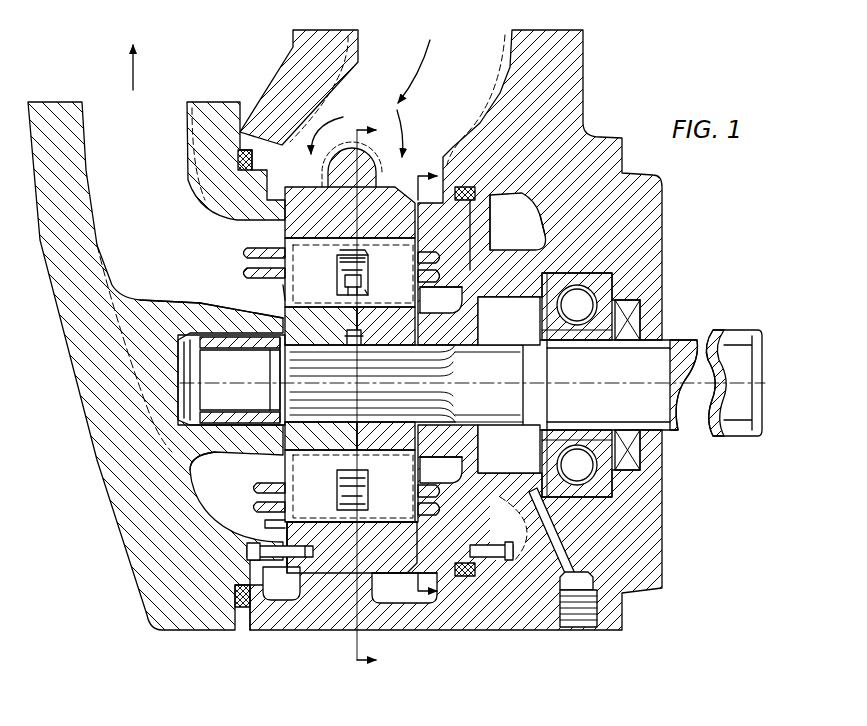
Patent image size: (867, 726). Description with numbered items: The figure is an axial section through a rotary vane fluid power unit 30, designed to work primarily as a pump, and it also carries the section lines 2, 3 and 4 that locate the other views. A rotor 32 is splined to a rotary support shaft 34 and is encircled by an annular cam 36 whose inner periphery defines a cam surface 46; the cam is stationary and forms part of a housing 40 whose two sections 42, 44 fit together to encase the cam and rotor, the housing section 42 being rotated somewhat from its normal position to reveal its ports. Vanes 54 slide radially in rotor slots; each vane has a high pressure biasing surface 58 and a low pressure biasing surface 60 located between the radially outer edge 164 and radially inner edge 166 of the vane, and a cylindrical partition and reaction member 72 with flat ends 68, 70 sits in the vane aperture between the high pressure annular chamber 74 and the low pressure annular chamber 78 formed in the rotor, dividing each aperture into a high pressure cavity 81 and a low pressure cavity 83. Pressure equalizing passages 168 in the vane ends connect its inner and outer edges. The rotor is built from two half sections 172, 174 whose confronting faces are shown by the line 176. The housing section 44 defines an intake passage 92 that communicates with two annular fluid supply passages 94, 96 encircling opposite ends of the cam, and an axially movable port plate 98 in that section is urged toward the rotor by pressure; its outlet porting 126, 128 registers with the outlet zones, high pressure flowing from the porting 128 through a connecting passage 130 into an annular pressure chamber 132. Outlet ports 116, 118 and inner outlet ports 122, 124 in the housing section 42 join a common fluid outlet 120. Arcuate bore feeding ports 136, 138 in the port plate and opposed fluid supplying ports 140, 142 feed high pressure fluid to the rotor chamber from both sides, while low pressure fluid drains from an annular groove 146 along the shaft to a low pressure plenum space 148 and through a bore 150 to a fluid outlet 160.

The section line 2- 2 is at (373, 397).
The section line 3- 3 is at (421, 383).
The section line 4- 4 is at (235, 396).
The rotary vane fluid power unit 30 is at (592, 125).
The rotor 32 is at (283, 325).
The rotary support shaft 34 is at (672, 352).
The annular cam 36 is at (315, 195).
The housing 40 is at (452, 631).
The housing section 42 is at (158, 560).
The housing section 44 is at (265, 620).
The cam surface 46 is at (326, 524).
The vanes 54 is at (302, 479).
The high pressure vane biasing surface 58 is at (370, 254).
The low pressure vane biasing surface 60 is at (370, 295).
The end of partition and reaction member 68 is at (340, 490).
The end of partition and reaction member 70 is at (368, 269).
The partition and reaction member 72 is at (345, 271).
The high pressure annular chamber 74 is at (348, 262).
The low pressure annular chamber 78 is at (345, 284).
The high pressure cavity 81 is at (358, 256).
The low pressure cavity 83 is at (350, 292).
The intake passage 92 is at (461, 52).
The annular fluid supply passage 94 is at (294, 596).
The annular fluid supply passage 96 is at (386, 601).
The port plate 98 is at (476, 214).
The outlet port 116 is at (283, 526).
The outlet port 118 is at (283, 241).
The common fluid outlet 120 is at (163, 122).
The inner outlet port 122 is at (283, 459).
The inner outlet port 124 is at (262, 311).
The outlet porting 126 is at (430, 479).
The outlet porting 128 is at (431, 309).
The connecting passage 130 is at (502, 222).
The annular pressure chamber 132 is at (527, 233).
The arcuate bore feeding port 136 is at (426, 498).
The arcuate bore feeding port 138 is at (437, 267).
The fluid supplying port 140 is at (268, 495).
The fluid supplying port 142 is at (268, 267).
The annular groove 146 is at (347, 341).
The low pressure plenum space 148 is at (480, 440).
The bore 150 is at (560, 543).
The fluid outlet 160 is at (588, 622).
The radially outer edge of vane 164 is at (382, 524).
The radially inner edge of vane 166 is at (365, 452).
The pressure equalizing passages 168 is at (283, 290).
The rotor half section 172 is at (328, 438).
The rotor half section 174 is at (398, 343).
The line of confronting faces 176 is at (353, 328).